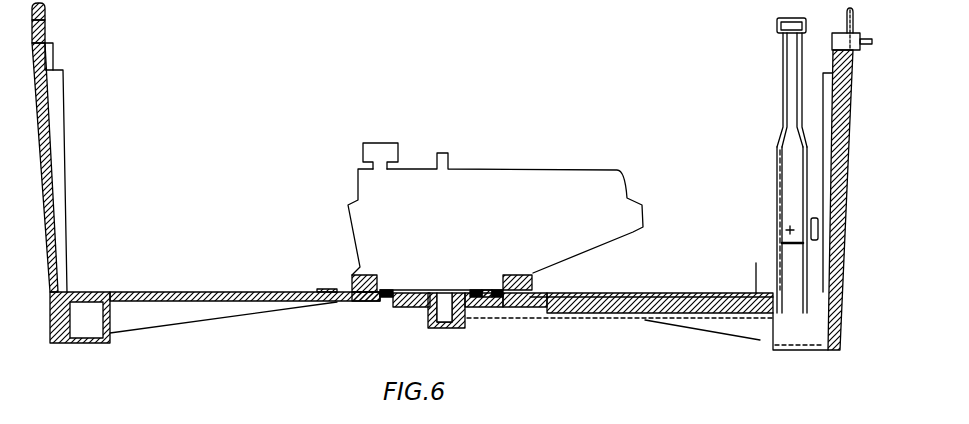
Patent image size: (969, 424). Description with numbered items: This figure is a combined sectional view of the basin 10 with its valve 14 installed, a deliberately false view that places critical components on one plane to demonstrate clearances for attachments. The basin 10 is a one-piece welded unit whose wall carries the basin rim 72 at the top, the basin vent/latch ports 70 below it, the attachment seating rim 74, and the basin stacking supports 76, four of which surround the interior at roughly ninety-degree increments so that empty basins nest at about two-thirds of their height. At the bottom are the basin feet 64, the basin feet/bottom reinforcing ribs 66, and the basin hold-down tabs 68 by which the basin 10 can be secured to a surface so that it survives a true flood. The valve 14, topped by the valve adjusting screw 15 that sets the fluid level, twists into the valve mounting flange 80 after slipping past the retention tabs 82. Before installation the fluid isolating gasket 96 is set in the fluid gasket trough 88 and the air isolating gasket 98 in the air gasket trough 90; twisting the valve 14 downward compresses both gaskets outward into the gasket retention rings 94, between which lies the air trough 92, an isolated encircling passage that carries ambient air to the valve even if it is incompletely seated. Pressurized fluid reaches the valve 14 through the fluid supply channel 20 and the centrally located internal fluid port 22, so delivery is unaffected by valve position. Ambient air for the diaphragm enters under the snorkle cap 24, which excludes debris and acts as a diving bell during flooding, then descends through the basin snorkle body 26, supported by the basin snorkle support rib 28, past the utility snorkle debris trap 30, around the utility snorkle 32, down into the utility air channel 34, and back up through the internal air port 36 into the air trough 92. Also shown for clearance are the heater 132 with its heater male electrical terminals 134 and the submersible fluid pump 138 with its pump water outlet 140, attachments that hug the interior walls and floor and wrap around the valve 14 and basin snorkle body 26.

The basin 10 is at (137, 283).
The valve 14 is at (547, 158).
The valve adjusting screw 15 is at (385, 140).
The fluid supply channel 20 is at (430, 325).
The internal fluid port 22 is at (440, 290).
The snorkle cap 24 is at (772, 22).
The basin snorkle body 26 is at (780, 133).
The basin snorkle support rib 28 is at (803, 170).
The utility snorkle debris trap 30 is at (780, 223).
The utility snorkle 32 is at (775, 245).
The utility air channel 34 is at (483, 313).
The internal air port 36 is at (483, 283).
The basin feet 64 is at (55, 315).
The basin feet/bottom reinforcing ribs 66 is at (157, 315).
The basin hold-down tabs 68 is at (83, 345).
The basin vent/latch ports 70 is at (45, 32).
The basin rim 72 is at (42, 5).
The attachment seating rim 74 is at (53, 60).
The basin stacking support 76 is at (58, 80).
The valve mounting flange 80 is at (347, 285).
The retention tabs 82 is at (357, 267).
The fluid gasket trough 88 is at (380, 303).
The air gasket trough 90 is at (407, 303).
The air trough 92 is at (393, 290).
The gasket retention rings 94 is at (350, 303).
The fluid isolating gasket 96 is at (497, 290).
The air isolating gasket 98 is at (480, 287).
The heater 132 is at (577, 284).
The heater male electrical terminals 134 is at (862, 52).
The submersible fluid pump 138 is at (760, 265).
The pump water outlet 140 is at (822, 228).